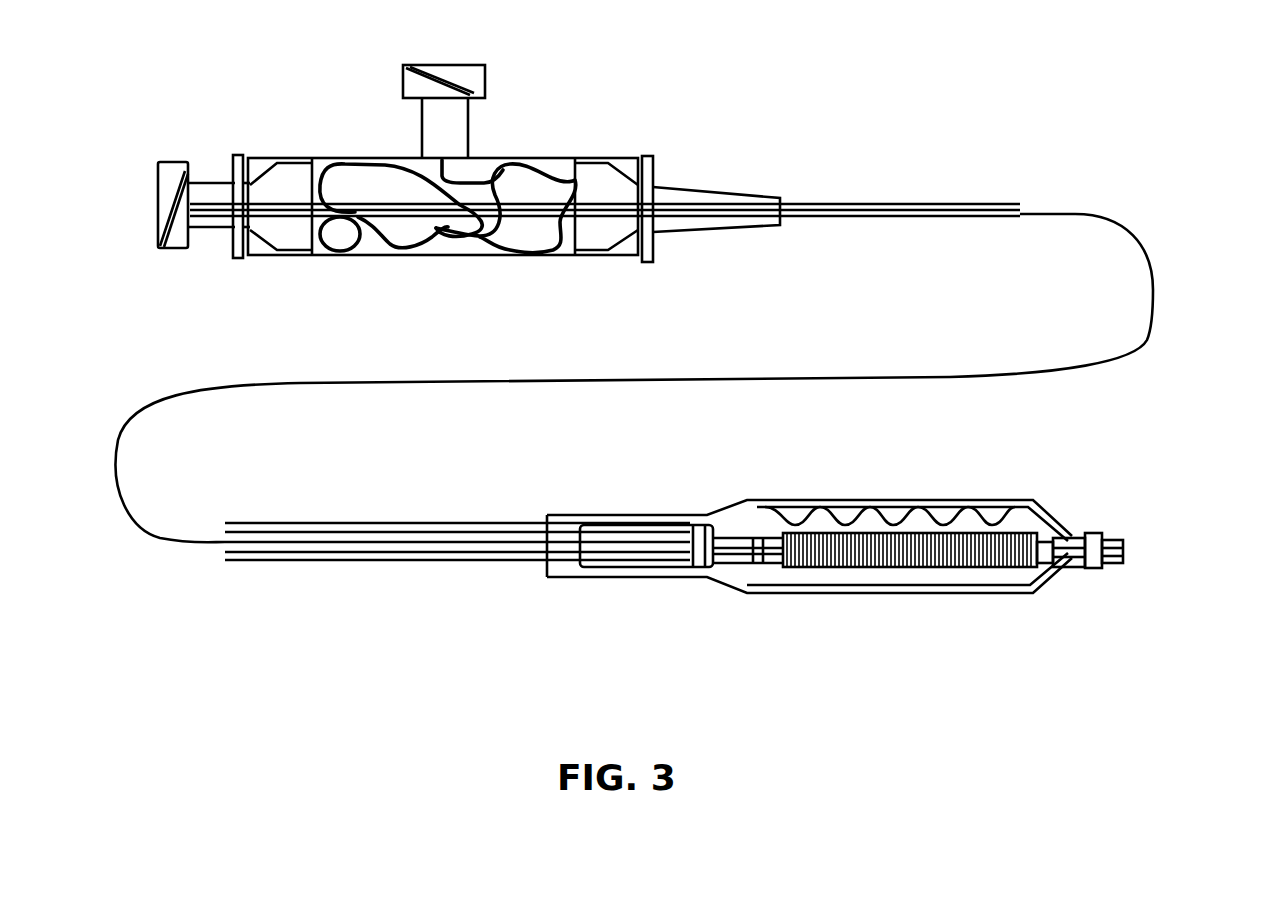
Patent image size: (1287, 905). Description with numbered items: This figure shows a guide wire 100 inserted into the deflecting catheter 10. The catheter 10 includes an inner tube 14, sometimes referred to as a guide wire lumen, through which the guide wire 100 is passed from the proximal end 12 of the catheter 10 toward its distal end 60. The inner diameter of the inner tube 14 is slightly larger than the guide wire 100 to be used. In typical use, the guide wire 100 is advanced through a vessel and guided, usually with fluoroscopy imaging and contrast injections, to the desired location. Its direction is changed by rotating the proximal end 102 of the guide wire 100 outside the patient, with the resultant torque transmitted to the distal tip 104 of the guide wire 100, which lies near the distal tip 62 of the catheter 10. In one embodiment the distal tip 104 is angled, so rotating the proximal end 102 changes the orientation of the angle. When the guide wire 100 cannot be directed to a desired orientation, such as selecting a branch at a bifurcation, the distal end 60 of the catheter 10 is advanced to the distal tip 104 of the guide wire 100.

The deflecting catheter 10 is at (1106, 133).
The proximal end 12 is at (533, 124).
The inner tube 14 is at (900, 218).
The distal end 60 is at (845, 658).
The distal tip 62 is at (1140, 540).
The guide wire 100 is at (1150, 342).
The proximal end 102 is at (156, 205).
The distal tip 104 is at (1123, 550).